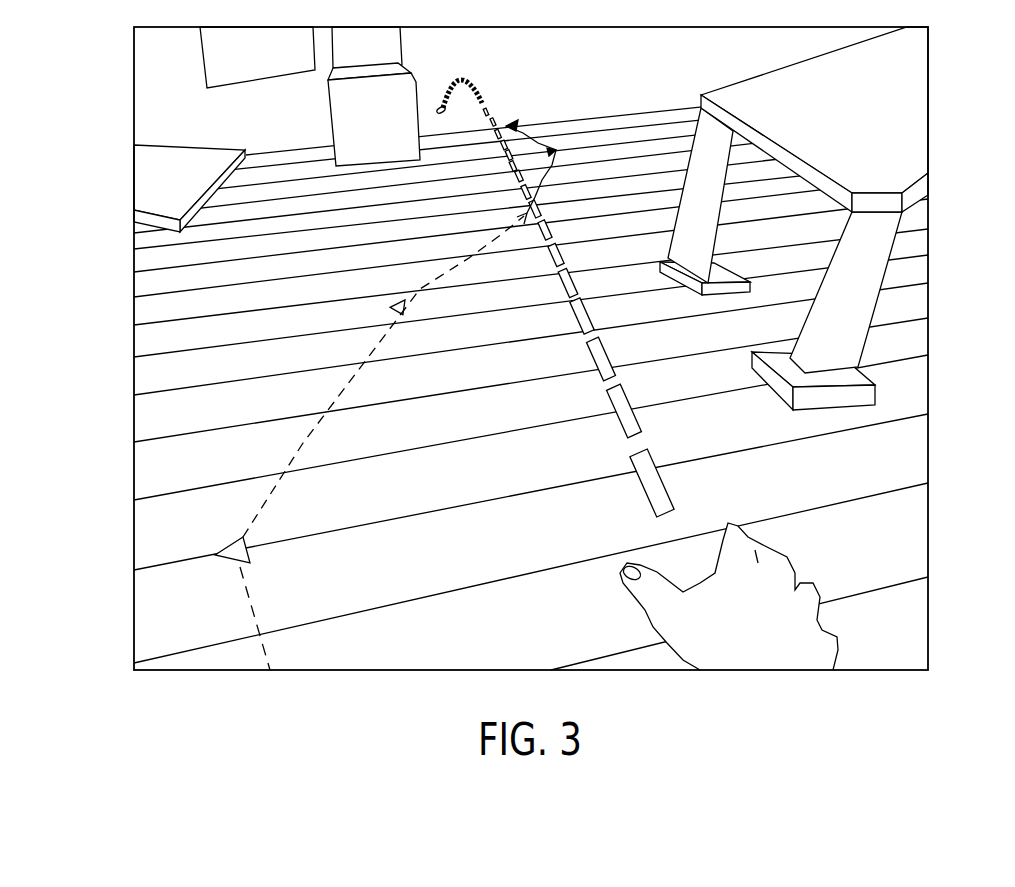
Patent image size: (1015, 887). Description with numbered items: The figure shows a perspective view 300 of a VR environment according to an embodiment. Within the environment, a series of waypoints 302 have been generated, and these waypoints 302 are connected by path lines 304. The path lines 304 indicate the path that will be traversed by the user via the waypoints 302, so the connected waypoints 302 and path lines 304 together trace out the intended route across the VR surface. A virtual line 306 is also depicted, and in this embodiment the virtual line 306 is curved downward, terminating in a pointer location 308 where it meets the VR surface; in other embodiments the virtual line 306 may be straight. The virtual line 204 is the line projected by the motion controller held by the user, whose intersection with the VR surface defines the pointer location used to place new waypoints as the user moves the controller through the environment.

The perspective view 300 is at (90, 122).
The waypoints 302 is at (232, 549).
The path lines 304 is at (300, 440).
The virtual line 306 is at (489, 96).
The pointer location 308 is at (432, 110).
The virtual line 204 is at (916, 494).